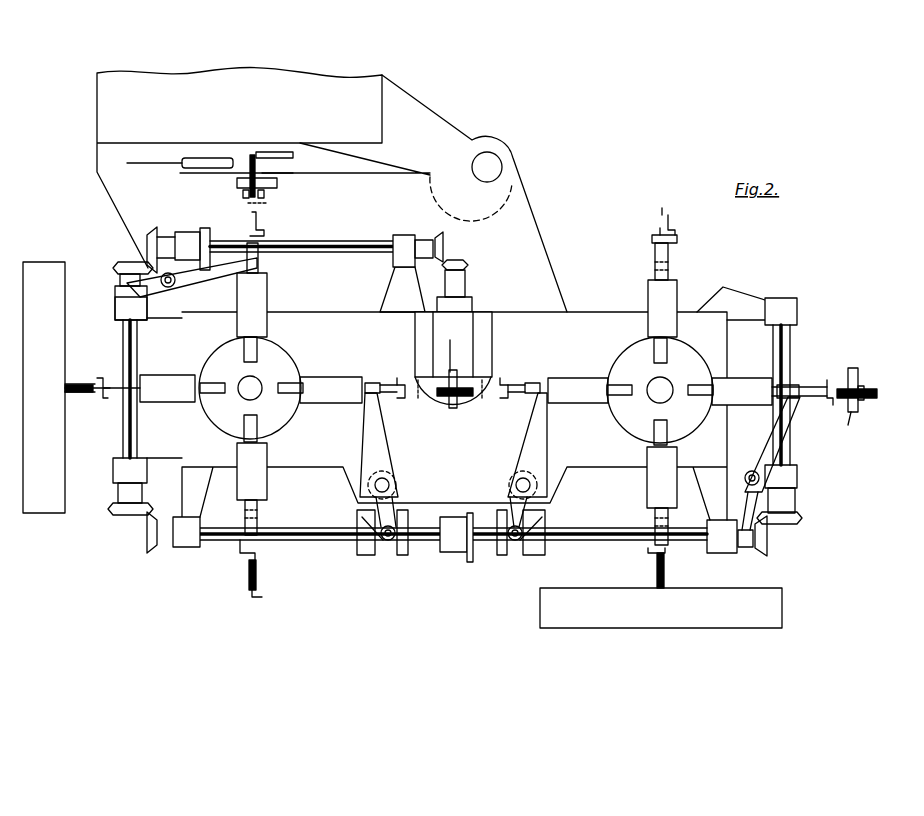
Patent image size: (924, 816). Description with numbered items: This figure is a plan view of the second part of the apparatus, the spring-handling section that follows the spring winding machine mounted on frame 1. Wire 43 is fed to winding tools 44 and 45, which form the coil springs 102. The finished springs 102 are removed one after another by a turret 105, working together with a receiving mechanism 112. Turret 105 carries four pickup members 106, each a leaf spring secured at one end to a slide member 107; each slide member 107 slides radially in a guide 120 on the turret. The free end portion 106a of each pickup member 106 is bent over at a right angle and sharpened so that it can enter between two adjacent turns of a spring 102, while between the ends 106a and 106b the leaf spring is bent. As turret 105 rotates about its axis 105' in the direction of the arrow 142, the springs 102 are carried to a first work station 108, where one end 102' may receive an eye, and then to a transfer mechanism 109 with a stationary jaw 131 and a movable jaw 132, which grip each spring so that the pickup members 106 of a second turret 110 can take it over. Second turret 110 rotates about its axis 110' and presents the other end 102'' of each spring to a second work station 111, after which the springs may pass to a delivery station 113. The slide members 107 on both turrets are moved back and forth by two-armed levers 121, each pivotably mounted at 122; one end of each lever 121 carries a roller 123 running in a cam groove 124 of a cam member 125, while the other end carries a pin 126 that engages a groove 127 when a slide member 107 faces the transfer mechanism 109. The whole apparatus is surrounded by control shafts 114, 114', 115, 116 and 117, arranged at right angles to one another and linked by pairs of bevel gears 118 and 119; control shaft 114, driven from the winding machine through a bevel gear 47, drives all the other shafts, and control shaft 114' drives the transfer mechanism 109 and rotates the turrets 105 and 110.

The frame 1 is at (272, 117).
The wire 43 is at (145, 165).
The winding tool 44 is at (252, 155).
The winding tool 45 is at (277, 152).
The bevel gear 47 is at (200, 228).
The coil spring 102 is at (453, 352).
The spring end with eye 102' is at (398, 478).
The other spring end 102'' is at (496, 462).
The turret 105 is at (254, 379).
The axis of rotation 105' is at (233, 377).
The pickup member 106 is at (262, 227).
The free end portion 106a is at (667, 213).
The leaf spring end 106b is at (655, 232).
The slide member 107 is at (260, 272).
The first work station 108 is at (50, 468).
The transfer mechanism 109 is at (497, 347).
The second turret 110 is at (655, 386).
The axis of rotation 110' is at (675, 379).
The second work station 111 is at (770, 612).
The receiving mechanism 112 is at (243, 193).
The delivery station 113 is at (864, 405).
The control shaft 114 is at (321, 260).
The control shaft 114' is at (475, 285).
The control shaft 115 is at (125, 437).
The control shaft 116 is at (295, 541).
The control shaft 117 is at (791, 440).
The bevel gear 118 is at (147, 240).
The bevel gear 119 is at (125, 262).
The guide 120 is at (264, 302).
The two-armed lever 121 is at (222, 272).
The pivot 122 is at (375, 487).
The roller 123 is at (380, 550).
The cam groove 124 is at (115, 282).
The cam member 125 is at (118, 288).
The pin 126 is at (372, 382).
The groove 127 is at (655, 268).
The jaw 131 is at (288, 178).
The jaw 132 is at (237, 183).
The arrow 142 is at (310, 420).